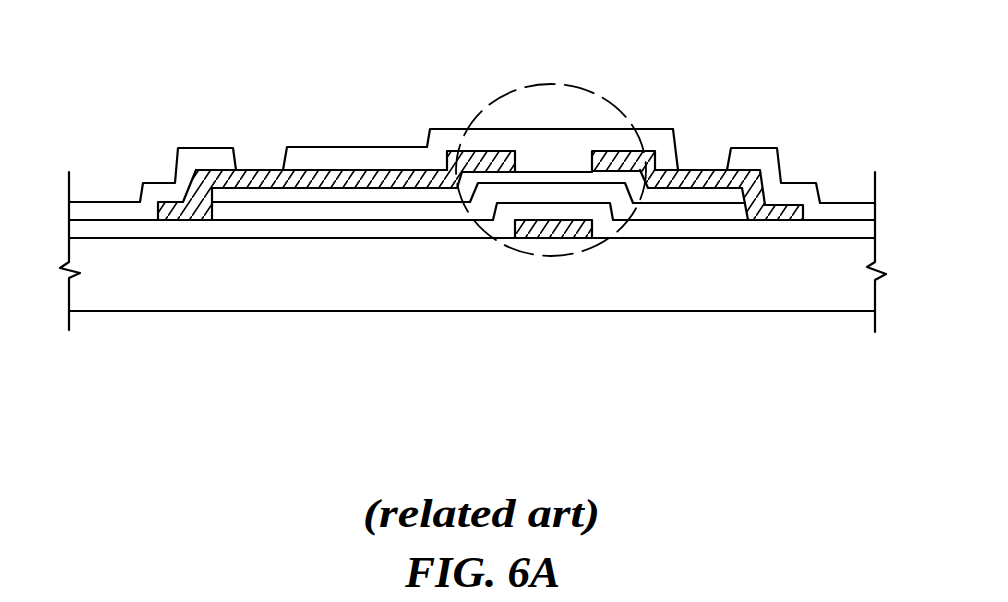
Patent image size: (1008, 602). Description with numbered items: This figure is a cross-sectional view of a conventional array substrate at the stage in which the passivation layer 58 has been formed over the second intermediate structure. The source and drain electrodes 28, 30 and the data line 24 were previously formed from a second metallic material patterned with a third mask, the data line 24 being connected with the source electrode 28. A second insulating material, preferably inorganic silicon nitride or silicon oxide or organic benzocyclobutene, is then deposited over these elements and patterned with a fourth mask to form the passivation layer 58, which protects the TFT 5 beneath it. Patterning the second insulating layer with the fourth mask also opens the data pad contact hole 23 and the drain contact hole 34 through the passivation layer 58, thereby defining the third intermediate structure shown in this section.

The TFT 5 is at (550, 257).
The data pad contact hole 23 is at (263, 157).
The data line 24 is at (343, 176).
The source electrode 28 is at (486, 154).
The drain electrode 30 is at (761, 170).
The drain contact hole 34 is at (706, 156).
The passivation layer 58 is at (556, 158).